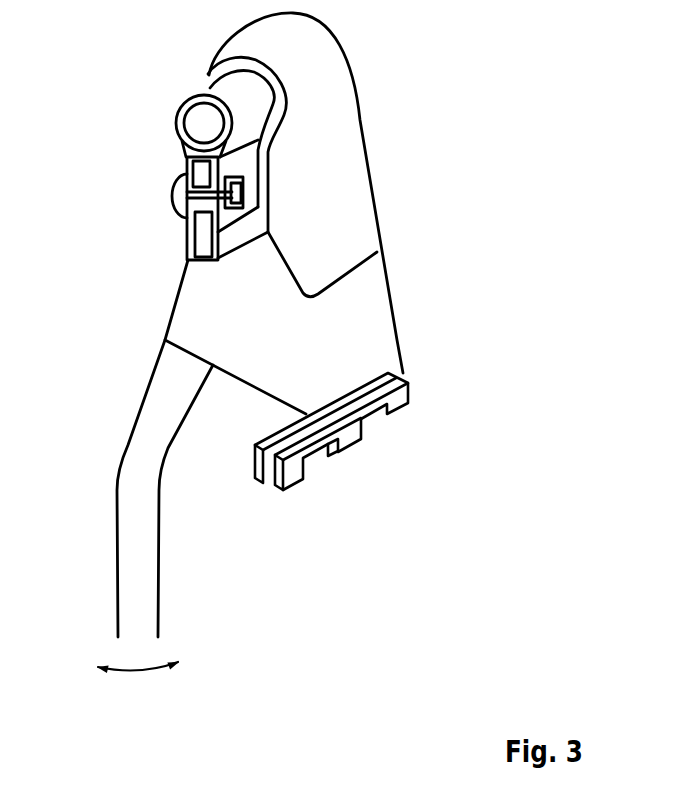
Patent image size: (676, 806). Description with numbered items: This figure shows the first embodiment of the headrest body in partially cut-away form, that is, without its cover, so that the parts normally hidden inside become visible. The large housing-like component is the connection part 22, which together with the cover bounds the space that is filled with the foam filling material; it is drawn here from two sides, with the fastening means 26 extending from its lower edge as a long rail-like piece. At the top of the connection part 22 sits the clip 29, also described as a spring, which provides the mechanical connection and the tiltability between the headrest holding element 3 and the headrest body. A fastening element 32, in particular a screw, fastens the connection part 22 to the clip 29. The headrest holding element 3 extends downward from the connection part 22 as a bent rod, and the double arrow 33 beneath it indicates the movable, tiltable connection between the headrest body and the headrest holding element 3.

The headrest holding element 3 is at (140, 501).
The connection part 22 is at (323, 163).
The fastening means 26 is at (356, 455).
The clip 29 is at (168, 130).
The fastening element 32 is at (172, 200).
The double arrow 33 is at (142, 672).